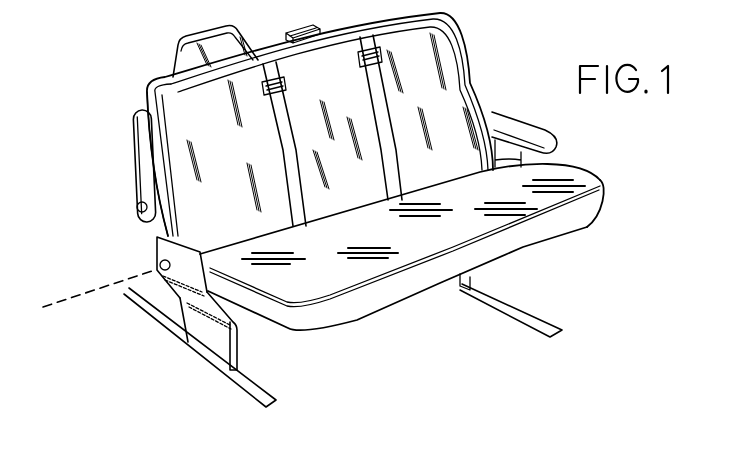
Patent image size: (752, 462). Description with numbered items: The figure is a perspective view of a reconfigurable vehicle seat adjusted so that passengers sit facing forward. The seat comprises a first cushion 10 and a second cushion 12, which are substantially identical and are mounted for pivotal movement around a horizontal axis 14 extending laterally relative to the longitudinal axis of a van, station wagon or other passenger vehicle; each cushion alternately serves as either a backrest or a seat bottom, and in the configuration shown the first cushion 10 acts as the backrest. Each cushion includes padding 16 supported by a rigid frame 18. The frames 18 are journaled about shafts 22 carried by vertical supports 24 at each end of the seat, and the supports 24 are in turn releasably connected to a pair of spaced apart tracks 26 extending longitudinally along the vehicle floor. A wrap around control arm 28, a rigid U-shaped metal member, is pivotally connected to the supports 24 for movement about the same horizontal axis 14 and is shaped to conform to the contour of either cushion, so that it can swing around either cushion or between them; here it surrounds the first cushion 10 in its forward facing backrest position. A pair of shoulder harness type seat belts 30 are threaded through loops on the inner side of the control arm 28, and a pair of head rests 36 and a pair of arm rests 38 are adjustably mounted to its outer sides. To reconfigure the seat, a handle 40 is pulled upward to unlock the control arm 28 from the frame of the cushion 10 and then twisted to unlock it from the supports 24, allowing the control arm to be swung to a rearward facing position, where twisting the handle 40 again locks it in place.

The first cushion 10 is at (463, 73).
The second cushion 12 is at (547, 177).
The horizontal axis 14 is at (88, 292).
The padding 16 is at (592, 208).
The rigid frame 18 is at (547, 247).
The shafts 22 is at (155, 255).
The vertical supports 24 is at (213, 343).
The tracks 26 is at (260, 383).
The wrap around control arm 28 is at (150, 100).
The shoulder harness type seat belts 30 is at (375, 90).
The head rests 36 is at (188, 38).
The arm rests 38 is at (138, 167).
The handle 40 is at (288, 29).